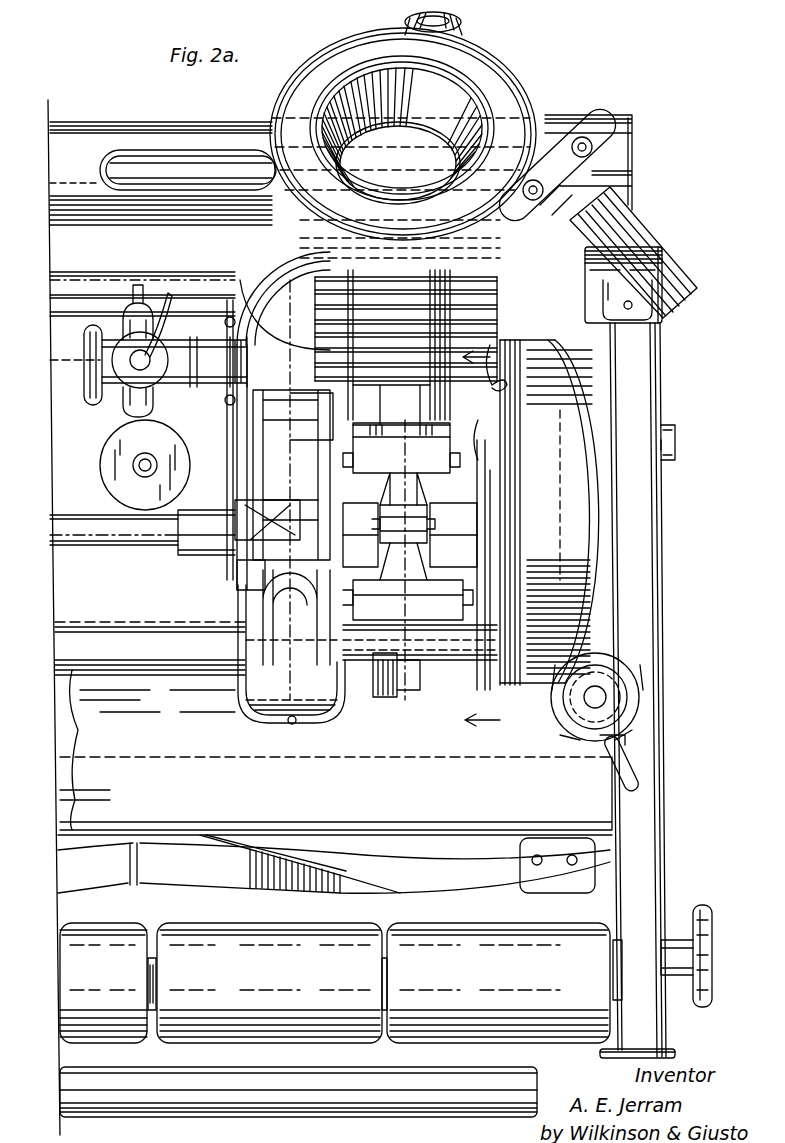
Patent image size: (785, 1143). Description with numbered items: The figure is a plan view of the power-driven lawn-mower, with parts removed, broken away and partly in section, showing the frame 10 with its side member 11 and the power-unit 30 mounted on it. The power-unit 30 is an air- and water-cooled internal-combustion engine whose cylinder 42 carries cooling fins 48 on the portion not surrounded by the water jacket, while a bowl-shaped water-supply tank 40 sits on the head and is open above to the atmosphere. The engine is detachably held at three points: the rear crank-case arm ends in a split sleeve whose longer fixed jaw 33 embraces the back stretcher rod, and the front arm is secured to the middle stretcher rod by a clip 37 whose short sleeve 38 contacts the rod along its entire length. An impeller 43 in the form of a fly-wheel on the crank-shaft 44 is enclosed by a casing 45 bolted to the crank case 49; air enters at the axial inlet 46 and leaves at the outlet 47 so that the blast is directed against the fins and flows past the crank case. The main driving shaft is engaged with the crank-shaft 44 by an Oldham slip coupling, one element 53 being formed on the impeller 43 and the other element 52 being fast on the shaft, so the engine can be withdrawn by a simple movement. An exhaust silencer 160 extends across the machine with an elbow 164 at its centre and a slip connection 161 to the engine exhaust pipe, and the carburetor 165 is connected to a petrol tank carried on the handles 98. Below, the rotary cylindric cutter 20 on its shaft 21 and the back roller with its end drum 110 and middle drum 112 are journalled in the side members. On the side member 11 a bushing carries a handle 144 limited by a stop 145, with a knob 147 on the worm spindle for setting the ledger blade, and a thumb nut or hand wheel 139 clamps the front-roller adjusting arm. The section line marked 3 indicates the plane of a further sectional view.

The handles 98 is at (457, 24).
The engine exhaust silencer 160 is at (146, 143).
The elbow 164 is at (200, 170).
The water-supply tank 40 is at (295, 100).
The middle drum 112 is at (76, 342).
The outlet 47 is at (265, 300).
The slip connection 161 is at (432, 182).
The cooling fins 48 is at (490, 270).
The power-unit 30 is at (535, 272).
The cylinder 42 is at (505, 340).
The fixed jaw 33 is at (600, 336).
The end drum 110 is at (575, 350).
The section line 3 is at (481, 529).
The carburetor 165 is at (128, 432).
The coupling element 52 is at (213, 527).
The axial inlet 46 is at (318, 478).
The coupling element 53 is at (235, 568).
The crank-shaft 44 is at (240, 582).
The impeller 43 is at (250, 613).
The casing 45 is at (272, 722).
The clip 37 is at (372, 695).
The sleeve 38 is at (408, 692).
The crank case 49 is at (435, 600).
The side member 11 is at (658, 683).
The stop 145 is at (650, 720).
The knob 147 is at (562, 735).
The handle 144 is at (612, 757).
The shaft 21 is at (62, 785).
The rotary cylindric cutter 20 is at (147, 858).
The thumb nut or hand wheel 139 is at (700, 905).
The frame 10 is at (675, 1055).